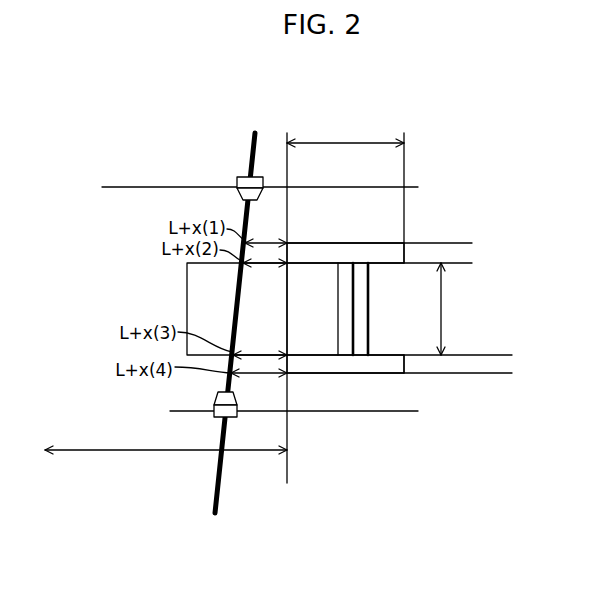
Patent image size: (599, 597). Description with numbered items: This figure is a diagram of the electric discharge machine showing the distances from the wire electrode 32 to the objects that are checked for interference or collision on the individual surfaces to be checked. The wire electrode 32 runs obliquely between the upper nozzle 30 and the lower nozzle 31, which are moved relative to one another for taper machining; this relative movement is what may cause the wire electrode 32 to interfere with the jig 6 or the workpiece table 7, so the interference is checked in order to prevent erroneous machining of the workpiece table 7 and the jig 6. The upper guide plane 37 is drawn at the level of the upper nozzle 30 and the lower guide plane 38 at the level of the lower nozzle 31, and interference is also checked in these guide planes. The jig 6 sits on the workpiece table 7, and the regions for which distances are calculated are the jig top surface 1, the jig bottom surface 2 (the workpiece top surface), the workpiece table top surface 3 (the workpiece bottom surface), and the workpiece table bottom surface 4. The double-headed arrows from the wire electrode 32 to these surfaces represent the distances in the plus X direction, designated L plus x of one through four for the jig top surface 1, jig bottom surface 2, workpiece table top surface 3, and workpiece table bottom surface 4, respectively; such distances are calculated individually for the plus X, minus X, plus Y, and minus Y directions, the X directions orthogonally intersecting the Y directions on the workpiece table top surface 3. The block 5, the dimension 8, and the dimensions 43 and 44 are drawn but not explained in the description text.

The jig top surface 1 is at (472, 243).
The jig bottom surface 2 is at (472, 263).
The workpiece table top surface 3 is at (512, 355).
The workpiece table bottom surface 4 is at (512, 373).
The frame block 5 is at (203, 291).
The jig 6 is at (366, 251).
The workpiece table 7 is at (312, 374).
The spacing 8 is at (450, 309).
The upper nozzle 30 is at (237, 178).
The lower nozzle 31 is at (212, 418).
The wire electrode 32 is at (223, 477).
The upper guide plane 37 is at (418, 187).
The lower guide plane 38 is at (380, 413).
The width dimension 43 is at (346, 141).
The length dimension 44 is at (166, 463).